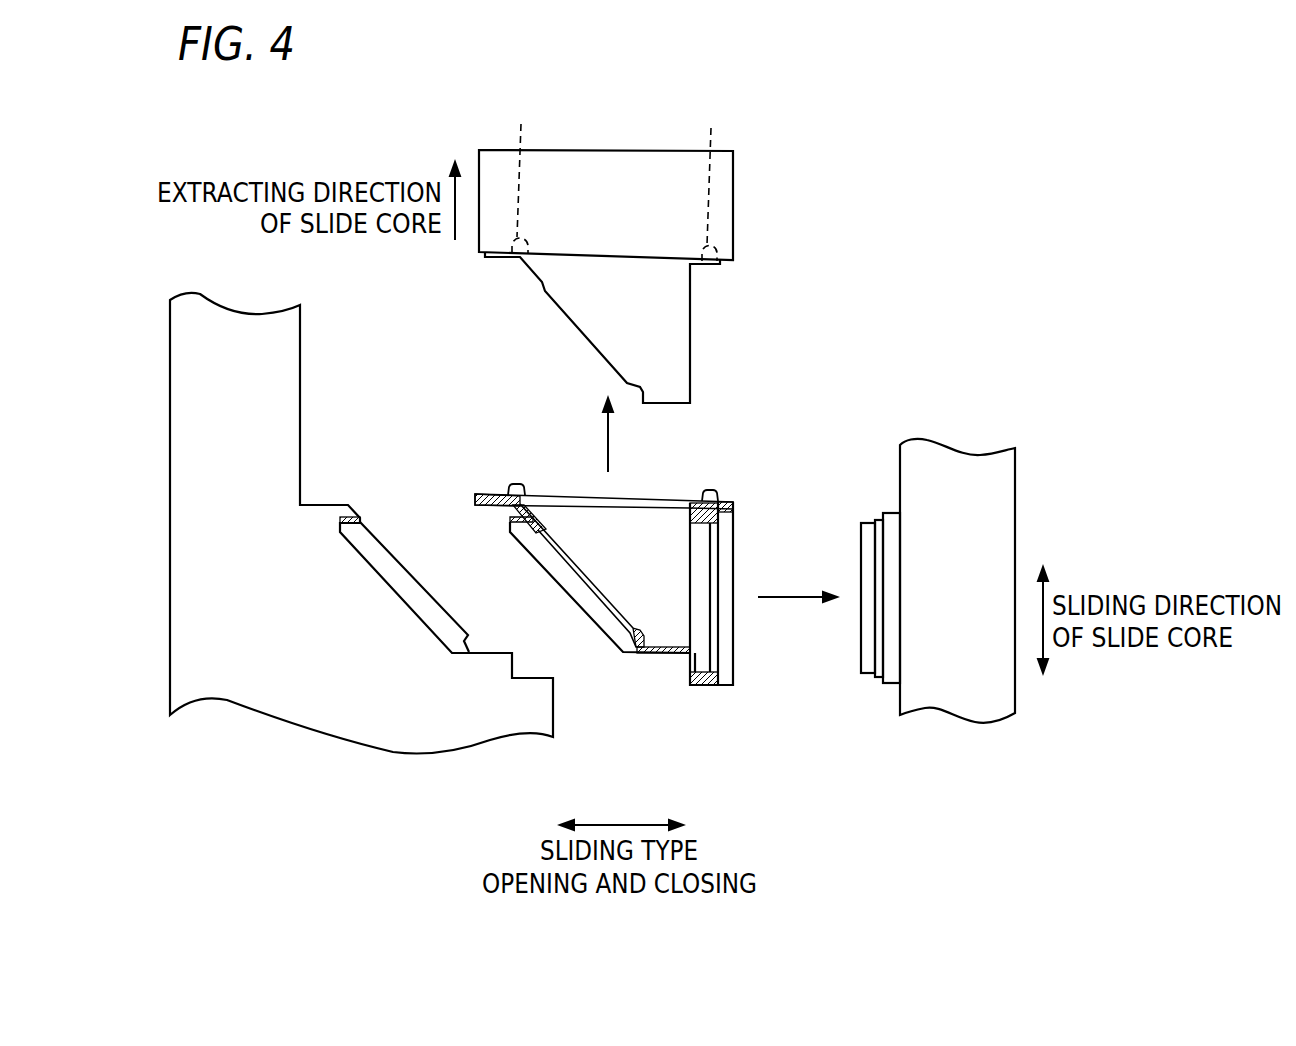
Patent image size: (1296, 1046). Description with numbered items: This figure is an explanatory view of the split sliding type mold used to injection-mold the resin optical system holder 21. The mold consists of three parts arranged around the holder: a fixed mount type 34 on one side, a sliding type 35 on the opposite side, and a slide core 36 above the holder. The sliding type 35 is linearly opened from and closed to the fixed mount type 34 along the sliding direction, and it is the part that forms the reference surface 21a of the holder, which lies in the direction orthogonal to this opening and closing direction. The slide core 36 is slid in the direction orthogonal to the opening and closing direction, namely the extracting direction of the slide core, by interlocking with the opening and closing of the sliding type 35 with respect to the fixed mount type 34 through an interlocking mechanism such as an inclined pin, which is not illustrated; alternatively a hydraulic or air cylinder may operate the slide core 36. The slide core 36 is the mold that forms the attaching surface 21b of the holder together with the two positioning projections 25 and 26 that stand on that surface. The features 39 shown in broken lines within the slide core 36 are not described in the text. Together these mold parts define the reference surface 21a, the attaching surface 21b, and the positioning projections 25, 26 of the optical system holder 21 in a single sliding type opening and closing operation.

The optical system holder 21 is at (641, 602).
The reference surface 21a is at (733, 660).
The attaching surface 21b is at (568, 495).
The positioning projection 25 is at (515, 484).
The positioning projection 26 is at (713, 490).
The fixed mount type 34 is at (166, 402).
The sliding type 35 is at (960, 446).
The slide core 36 is at (737, 203).
The engaging hole 39 is at (618, 178).